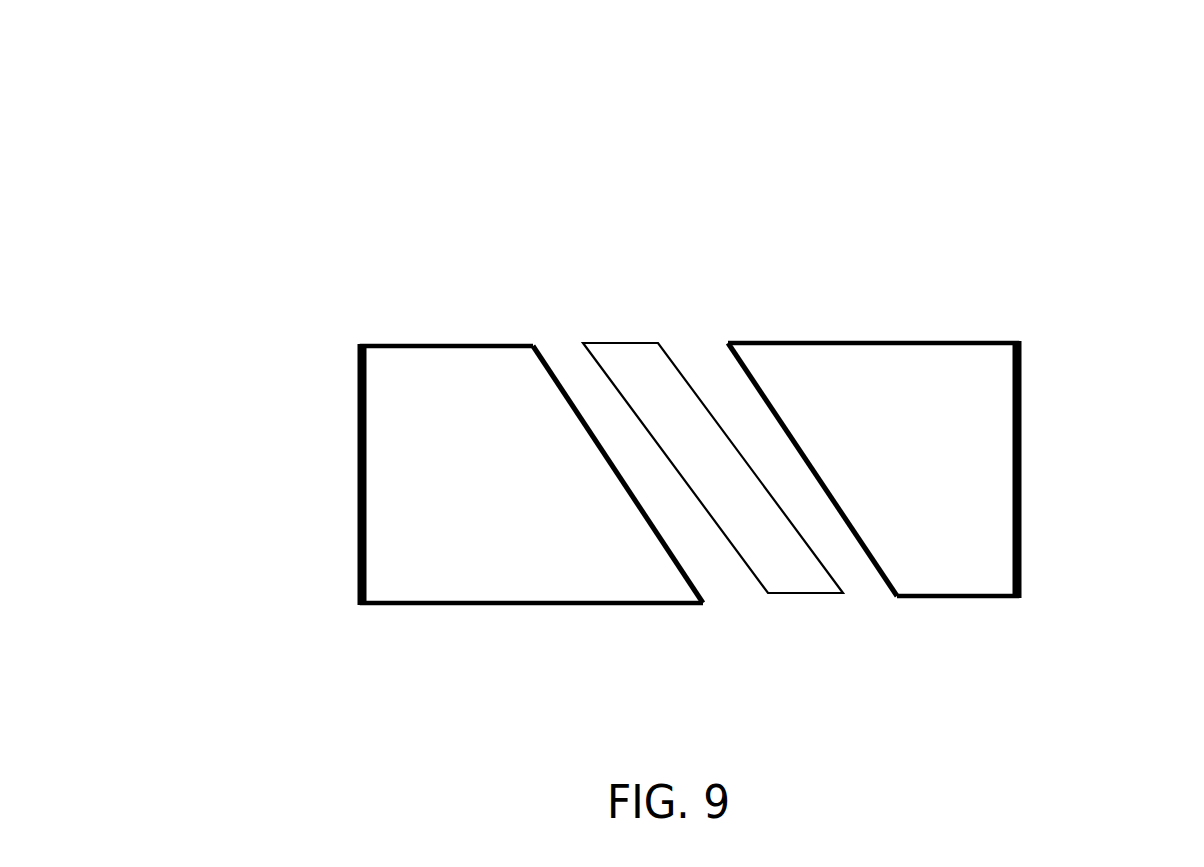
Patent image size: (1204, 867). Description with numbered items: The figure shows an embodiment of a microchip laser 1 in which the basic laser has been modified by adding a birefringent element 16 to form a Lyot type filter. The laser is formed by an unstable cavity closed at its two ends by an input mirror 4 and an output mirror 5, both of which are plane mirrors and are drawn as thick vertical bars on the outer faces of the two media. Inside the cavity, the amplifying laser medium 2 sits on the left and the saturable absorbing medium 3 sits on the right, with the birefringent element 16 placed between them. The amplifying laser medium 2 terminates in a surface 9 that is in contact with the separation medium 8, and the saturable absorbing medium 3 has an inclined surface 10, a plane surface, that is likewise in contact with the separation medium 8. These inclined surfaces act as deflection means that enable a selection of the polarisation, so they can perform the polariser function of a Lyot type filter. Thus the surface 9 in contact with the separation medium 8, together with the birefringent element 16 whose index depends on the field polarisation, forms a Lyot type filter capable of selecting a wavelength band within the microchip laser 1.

The microchip laser 1 is at (318, 204).
The amplifying laser medium 2 is at (456, 483).
The saturable absorbing medium 3 is at (953, 494).
The input mirror 4 is at (351, 559).
The output mirror 5 is at (1029, 537).
The separation medium 8 is at (592, 402).
The surface 9 is at (653, 530).
The inclined surface 10 is at (857, 537).
The birefringent element 16 is at (638, 365).